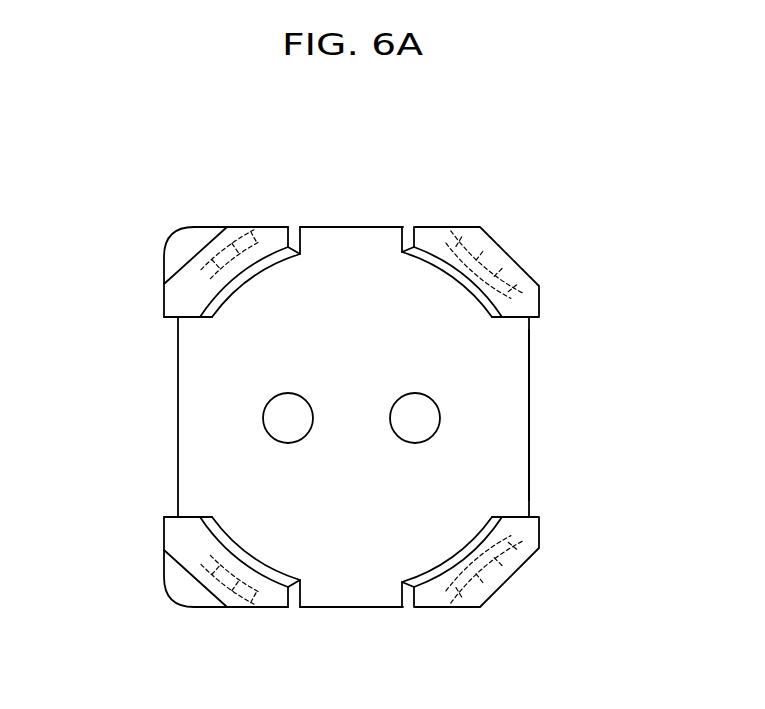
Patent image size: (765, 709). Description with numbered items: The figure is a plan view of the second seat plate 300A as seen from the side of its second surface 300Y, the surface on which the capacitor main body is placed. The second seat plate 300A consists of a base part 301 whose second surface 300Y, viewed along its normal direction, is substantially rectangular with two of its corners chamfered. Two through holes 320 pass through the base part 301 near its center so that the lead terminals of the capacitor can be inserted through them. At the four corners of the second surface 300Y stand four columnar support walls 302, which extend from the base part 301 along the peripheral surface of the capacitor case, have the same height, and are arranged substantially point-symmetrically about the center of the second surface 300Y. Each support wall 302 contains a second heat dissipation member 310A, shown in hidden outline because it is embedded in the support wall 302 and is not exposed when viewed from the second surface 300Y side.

The second seat plate 300A is at (386, 101).
The base part 301 is at (489, 468).
The second surface 300Y is at (492, 363).
The columnar support wall 302 is at (432, 240).
The second heat dissipation member 310A is at (163, 303).
The through hole 320 is at (420, 421).